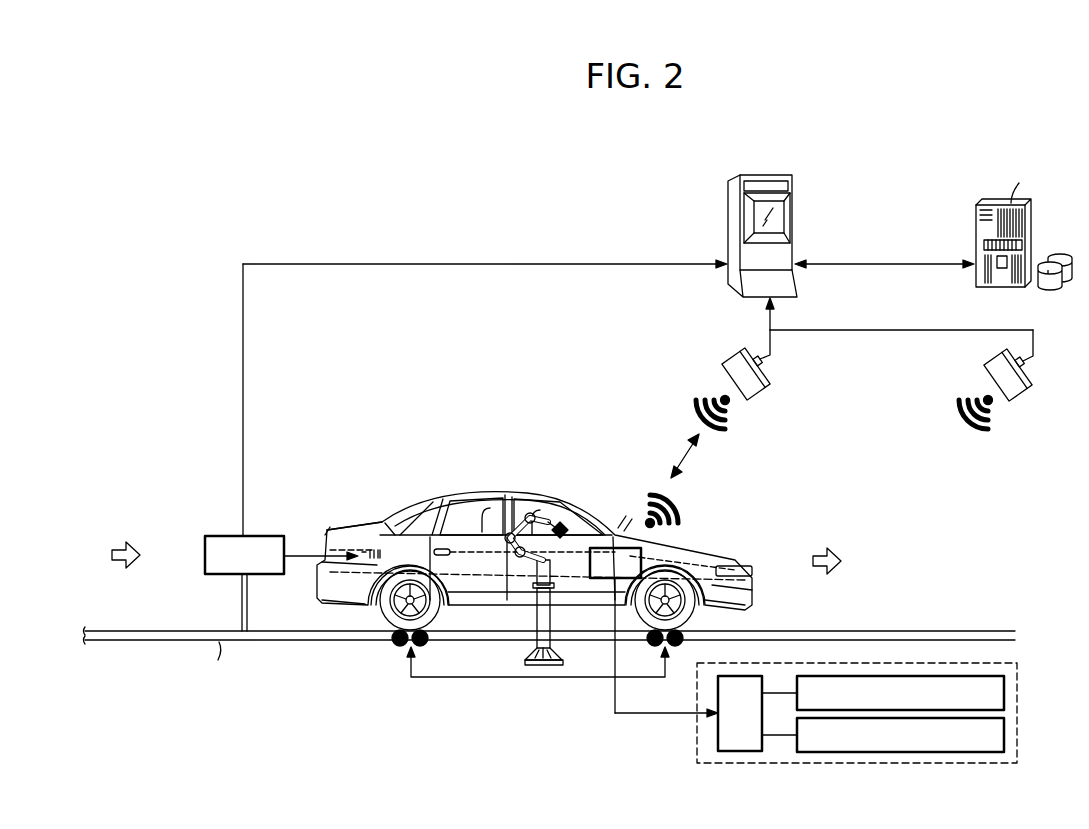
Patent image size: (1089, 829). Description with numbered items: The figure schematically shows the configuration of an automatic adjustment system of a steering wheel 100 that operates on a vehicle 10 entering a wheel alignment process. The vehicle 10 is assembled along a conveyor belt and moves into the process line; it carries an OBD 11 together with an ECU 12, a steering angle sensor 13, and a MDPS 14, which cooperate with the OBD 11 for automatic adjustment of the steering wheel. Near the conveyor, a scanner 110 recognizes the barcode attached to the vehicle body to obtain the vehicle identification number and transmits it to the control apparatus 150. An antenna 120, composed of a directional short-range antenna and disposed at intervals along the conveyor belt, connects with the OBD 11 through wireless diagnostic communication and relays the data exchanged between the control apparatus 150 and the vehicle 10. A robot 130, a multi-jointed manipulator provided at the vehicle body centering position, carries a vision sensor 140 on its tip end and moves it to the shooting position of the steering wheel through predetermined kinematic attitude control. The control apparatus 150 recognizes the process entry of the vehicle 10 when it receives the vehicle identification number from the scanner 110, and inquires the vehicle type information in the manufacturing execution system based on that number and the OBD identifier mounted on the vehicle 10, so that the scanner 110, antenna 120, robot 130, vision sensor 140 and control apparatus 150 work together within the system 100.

The vehicle 10 is at (461, 487).
The OBD 11 is at (652, 555).
The ECU 12 is at (718, 739).
The steering angle sensor 13 is at (1004, 693).
The MDPS 14 is at (1004, 735).
The automatic adjustment system of a steering wheel 100 is at (478, 349).
The scanner 110 is at (218, 535).
The antenna 120 is at (728, 358).
The robot 130 is at (527, 517).
The vision sensor 140 is at (564, 524).
The control apparatus 150 is at (772, 174).